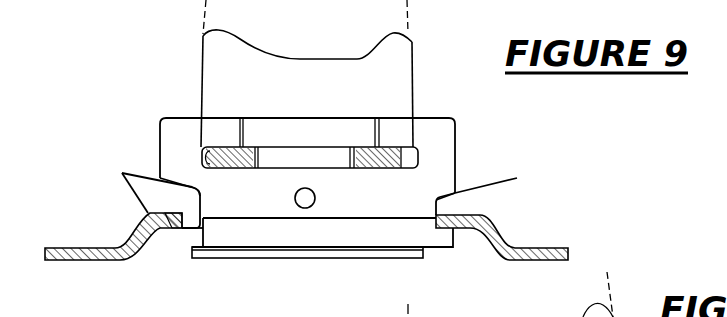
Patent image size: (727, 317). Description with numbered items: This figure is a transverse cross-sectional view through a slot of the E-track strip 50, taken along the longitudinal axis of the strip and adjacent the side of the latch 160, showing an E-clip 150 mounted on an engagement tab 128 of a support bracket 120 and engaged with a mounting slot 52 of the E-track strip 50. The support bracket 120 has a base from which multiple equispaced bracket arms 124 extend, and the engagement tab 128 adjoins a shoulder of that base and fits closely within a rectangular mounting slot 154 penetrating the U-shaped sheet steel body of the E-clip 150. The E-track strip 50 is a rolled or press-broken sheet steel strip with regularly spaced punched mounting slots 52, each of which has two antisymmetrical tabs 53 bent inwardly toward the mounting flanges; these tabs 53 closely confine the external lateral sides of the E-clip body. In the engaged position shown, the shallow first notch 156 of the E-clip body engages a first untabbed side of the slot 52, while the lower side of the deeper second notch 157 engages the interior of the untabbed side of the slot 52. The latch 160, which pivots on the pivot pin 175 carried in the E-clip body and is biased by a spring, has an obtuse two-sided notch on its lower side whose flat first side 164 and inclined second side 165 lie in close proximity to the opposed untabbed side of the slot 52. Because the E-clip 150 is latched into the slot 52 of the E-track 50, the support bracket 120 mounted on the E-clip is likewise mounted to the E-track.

The support bracket 120 is at (297, 84).
The bracket arms 124 is at (343, 61).
The engagement tab 128 is at (345, 105).
The E-clip 150 is at (380, 201).
The mounting slots 154 is at (310, 176).
The pivot pin 175 is at (303, 236).
The mounting slots 52 is at (322, 232).
The antisymmetrical tabs 53 is at (317, 272).
The latch 160 is at (121, 178).
The flat surface 164 is at (112, 254).
The second side 165 is at (120, 265).
The second notches 157 is at (217, 265).
The first notches 156 is at (515, 183).
The E-track strip 50 is at (505, 226).